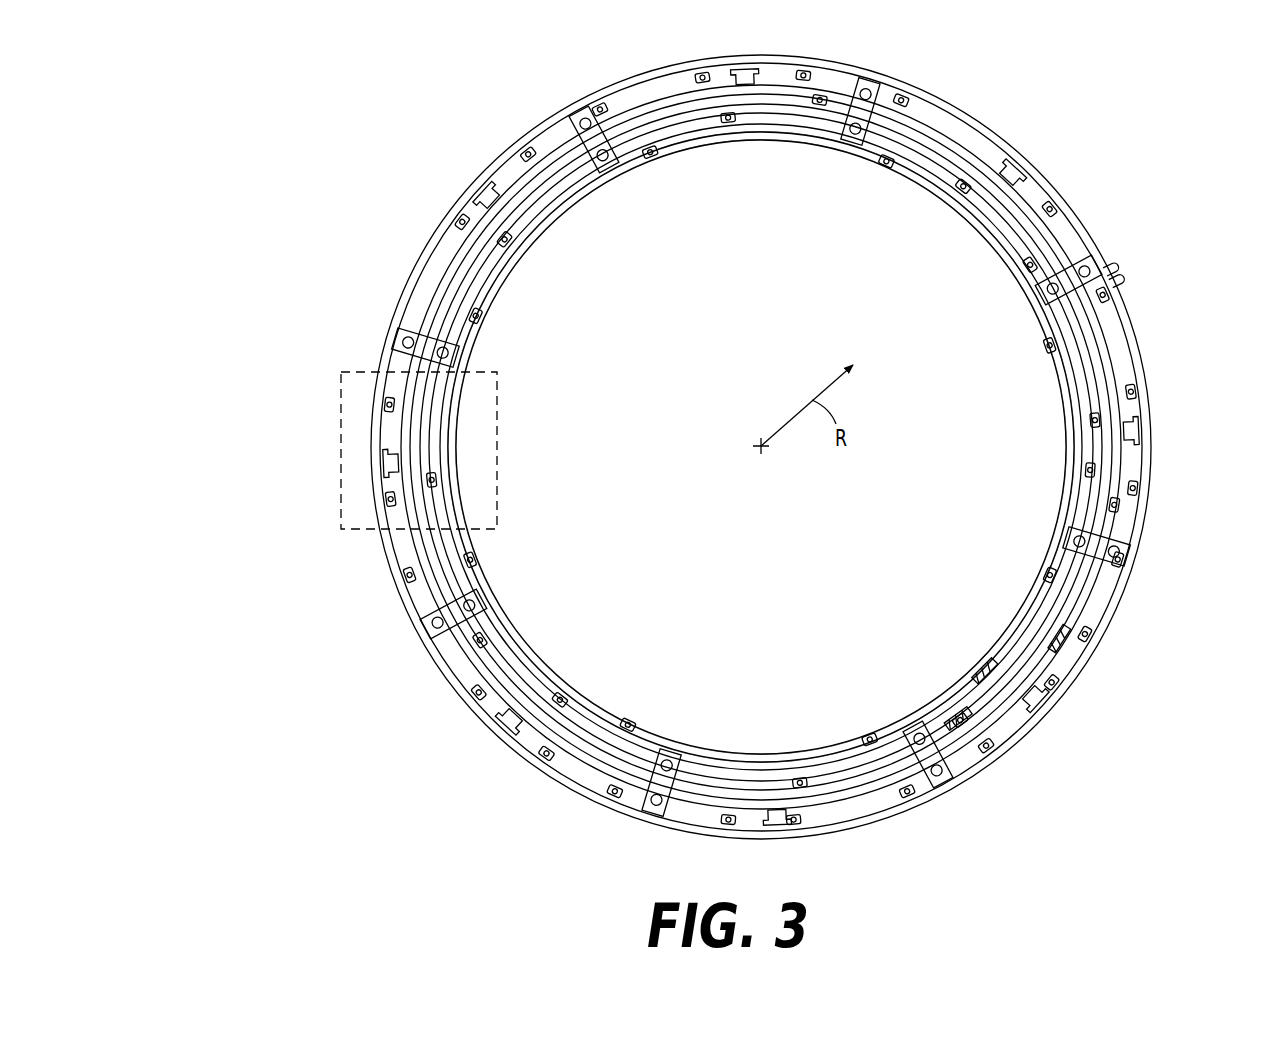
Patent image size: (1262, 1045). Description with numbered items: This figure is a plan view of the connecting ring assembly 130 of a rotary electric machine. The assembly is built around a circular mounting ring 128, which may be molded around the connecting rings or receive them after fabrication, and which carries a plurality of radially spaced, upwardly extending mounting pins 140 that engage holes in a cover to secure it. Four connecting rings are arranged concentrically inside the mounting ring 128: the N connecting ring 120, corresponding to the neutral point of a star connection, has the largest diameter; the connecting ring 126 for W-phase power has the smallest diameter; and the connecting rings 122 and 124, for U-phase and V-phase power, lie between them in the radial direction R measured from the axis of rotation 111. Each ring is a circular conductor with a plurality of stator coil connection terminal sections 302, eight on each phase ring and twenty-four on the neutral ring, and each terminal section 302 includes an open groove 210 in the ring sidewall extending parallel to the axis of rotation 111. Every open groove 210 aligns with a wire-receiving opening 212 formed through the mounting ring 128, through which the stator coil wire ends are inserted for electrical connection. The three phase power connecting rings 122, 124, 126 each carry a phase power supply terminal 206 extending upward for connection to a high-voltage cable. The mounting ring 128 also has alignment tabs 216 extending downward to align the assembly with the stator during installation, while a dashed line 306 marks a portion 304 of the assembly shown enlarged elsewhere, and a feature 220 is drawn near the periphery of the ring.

The connecting ring assembly 130 is at (125, 108).
The mounting pins 140 is at (573, 112).
The stator coil connection terminal sections 302 is at (834, 60).
The open groove 210 is at (647, 155).
The wire-receiving opening 212 is at (658, 155).
The connector 220 is at (1117, 263).
The connecting ring 126 is at (1073, 367).
The connecting ring 124 is at (1097, 378).
The connecting ring 122 is at (1115, 388).
The N connecting ring 120 is at (1147, 443).
The mounting ring 128 is at (1153, 463).
The dashed line 306 is at (342, 385).
The inner rail 304 is at (480, 428).
The axis of rotation 111 is at (757, 446).
The phase power supply terminals 206 is at (1065, 638).
The alignment tabs 216 is at (1045, 702).